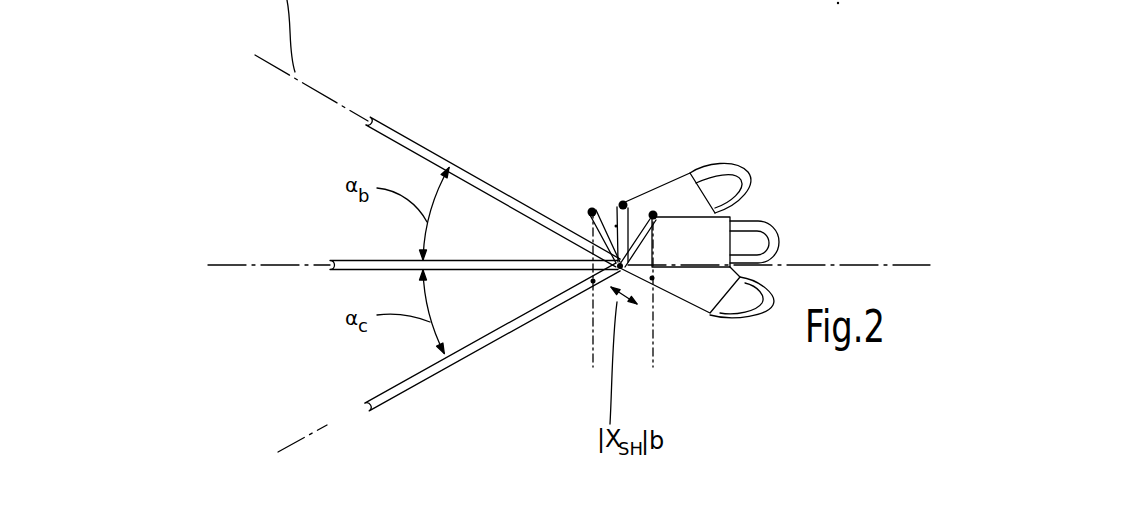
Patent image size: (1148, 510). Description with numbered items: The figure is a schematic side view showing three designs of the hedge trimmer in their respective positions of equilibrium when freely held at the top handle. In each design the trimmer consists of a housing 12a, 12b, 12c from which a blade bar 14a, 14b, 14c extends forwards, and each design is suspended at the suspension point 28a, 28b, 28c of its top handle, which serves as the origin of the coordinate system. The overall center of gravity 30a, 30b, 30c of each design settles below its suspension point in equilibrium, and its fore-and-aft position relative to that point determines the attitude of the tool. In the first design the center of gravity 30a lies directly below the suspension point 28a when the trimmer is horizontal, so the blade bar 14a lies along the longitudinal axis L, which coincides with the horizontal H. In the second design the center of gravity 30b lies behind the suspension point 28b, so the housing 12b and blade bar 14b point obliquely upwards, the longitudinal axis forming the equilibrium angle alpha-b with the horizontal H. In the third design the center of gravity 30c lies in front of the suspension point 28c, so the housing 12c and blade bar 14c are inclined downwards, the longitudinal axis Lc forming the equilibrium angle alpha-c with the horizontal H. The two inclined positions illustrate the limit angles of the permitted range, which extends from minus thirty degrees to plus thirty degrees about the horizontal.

The hedge trimmer housing (first design) 12a is at (712, 246).
The hedge trimmer housing (second design) 12b is at (703, 317).
The hedge trimmer housing (third design) 12c is at (683, 190).
The blade bar 14a is at (342, 270).
The blade bar 14b is at (418, 145).
The blade bar 14c is at (477, 350).
The suspension point 28a is at (623, 200).
The suspension point 28b is at (655, 210).
The suspension point 28c is at (588, 207).
The center of gravity 30a is at (615, 225).
The center of gravity 30b is at (653, 278).
The center of gravity 30c is at (593, 282).
The horizontal H is at (238, 262).
The longitudinal axis L is at (900, 262).
The longitudinal axis (third design) Lc is at (312, 433).